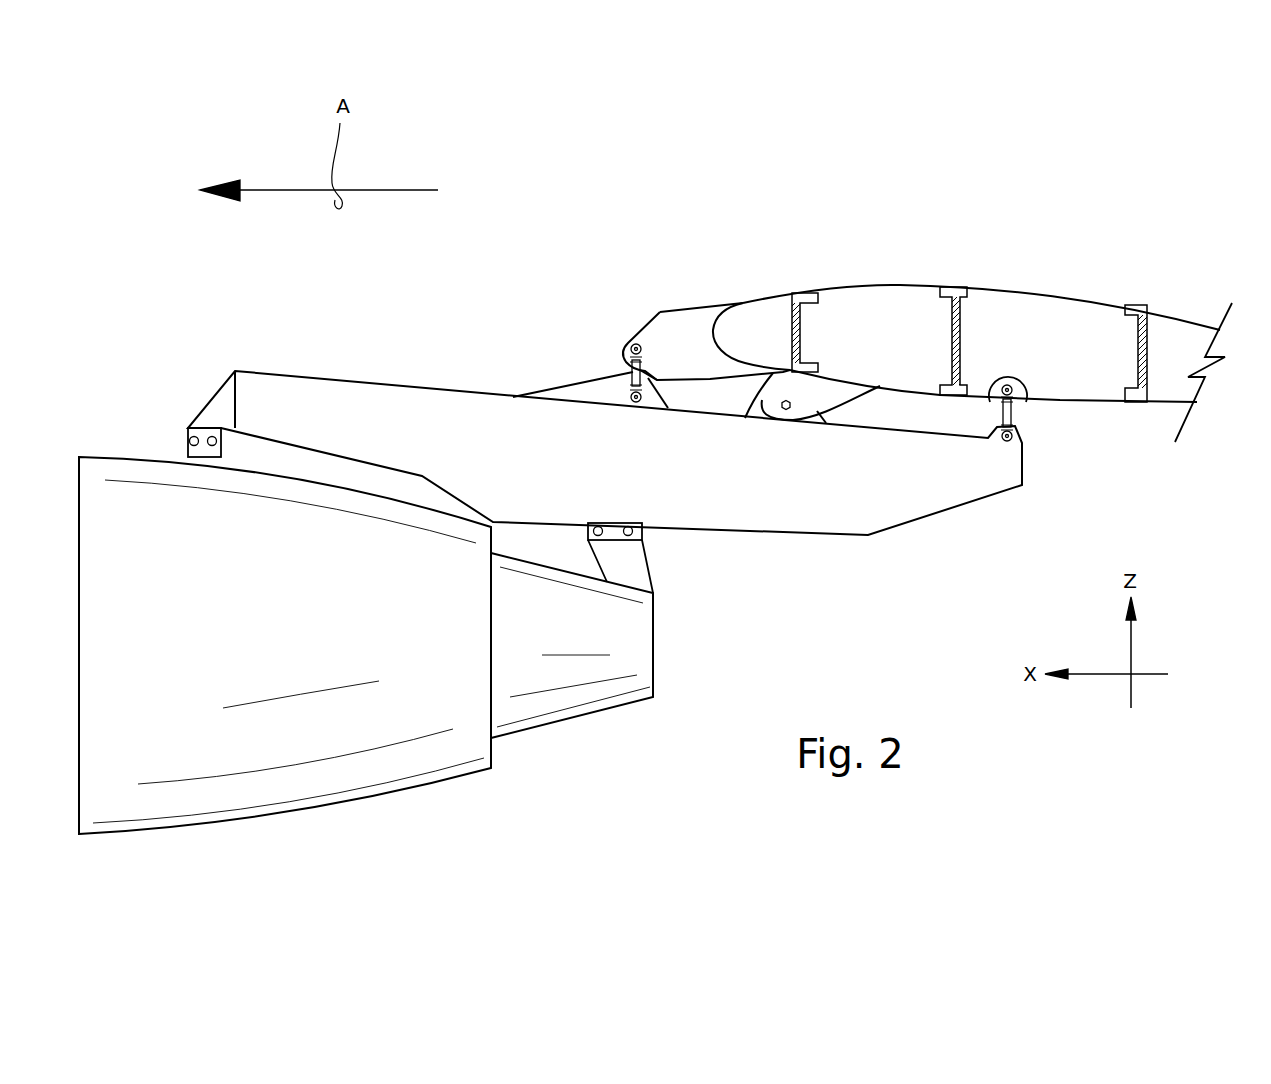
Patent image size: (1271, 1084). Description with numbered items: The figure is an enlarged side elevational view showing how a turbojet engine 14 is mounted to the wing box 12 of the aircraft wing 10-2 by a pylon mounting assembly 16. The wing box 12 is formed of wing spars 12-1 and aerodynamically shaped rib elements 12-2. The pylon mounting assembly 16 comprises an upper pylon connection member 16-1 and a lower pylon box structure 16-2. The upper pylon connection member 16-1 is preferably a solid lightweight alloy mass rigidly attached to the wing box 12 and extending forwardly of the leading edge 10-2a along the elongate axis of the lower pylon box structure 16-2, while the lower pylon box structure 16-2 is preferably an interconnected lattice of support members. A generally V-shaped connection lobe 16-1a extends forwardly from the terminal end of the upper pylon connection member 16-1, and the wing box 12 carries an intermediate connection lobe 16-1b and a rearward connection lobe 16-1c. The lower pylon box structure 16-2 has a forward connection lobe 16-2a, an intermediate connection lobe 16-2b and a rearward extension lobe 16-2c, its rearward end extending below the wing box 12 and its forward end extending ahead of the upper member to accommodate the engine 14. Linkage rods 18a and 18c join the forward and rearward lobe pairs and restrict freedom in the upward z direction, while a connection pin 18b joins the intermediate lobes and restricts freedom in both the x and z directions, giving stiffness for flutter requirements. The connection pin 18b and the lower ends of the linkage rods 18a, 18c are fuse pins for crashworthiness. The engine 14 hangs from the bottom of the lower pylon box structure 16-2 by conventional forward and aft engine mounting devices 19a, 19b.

The turbojet engine 14 is at (202, 632).
The pylon mounting assembly 16 is at (547, 286).
The upper pylon connection member 16-1 is at (695, 327).
The connection lobe 16-1a is at (647, 323).
The intermediate connection lobe 16-1b is at (827, 393).
The rearward connection lobe 16-1c is at (1020, 395).
The lower pylon box structure 16-2 is at (440, 436).
The forward connection lobe 16-2a is at (577, 397).
The intermediate connection lobe 16-2b is at (757, 412).
The rearward extension lobe 16-2c is at (997, 438).
The linkage rod 18a is at (630, 370).
The connection pin 18b is at (788, 412).
The linkage rod 18c is at (1017, 417).
The forward engine mounting device 19a is at (176, 438).
The aft engine mounting device 19b is at (652, 568).
The wing 10-2 is at (935, 270).
The leading edge 10-2a is at (713, 335).
The wing box 12 is at (1063, 318).
The wing spars 12-1 is at (808, 291).
The rib elements 12-2 is at (909, 342).